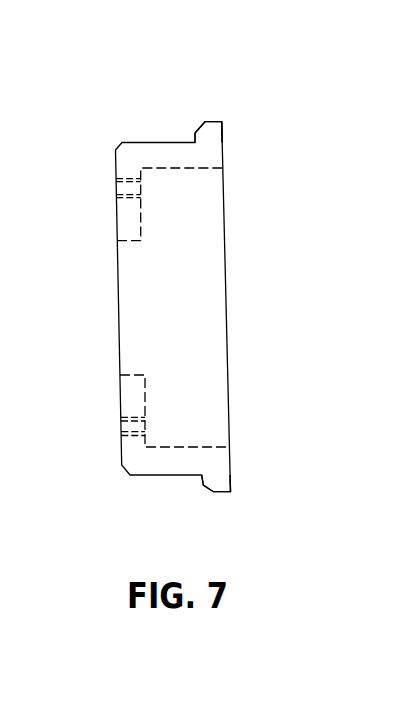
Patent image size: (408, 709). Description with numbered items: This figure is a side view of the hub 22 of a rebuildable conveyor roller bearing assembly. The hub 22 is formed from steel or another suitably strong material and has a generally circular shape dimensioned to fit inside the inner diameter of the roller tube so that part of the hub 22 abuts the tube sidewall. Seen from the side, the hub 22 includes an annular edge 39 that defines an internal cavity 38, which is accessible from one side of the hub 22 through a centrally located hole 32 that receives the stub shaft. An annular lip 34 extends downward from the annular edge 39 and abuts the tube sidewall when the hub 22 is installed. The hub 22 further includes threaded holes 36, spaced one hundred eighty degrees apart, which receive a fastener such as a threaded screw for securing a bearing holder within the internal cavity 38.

The hub 22 is at (170, 284).
The centrally located hole 32 is at (123, 308).
The annular lip 34 is at (211, 118).
The threaded hole 36 is at (117, 190).
The internal cavity 38 is at (207, 319).
The annular edge 39 is at (224, 148).